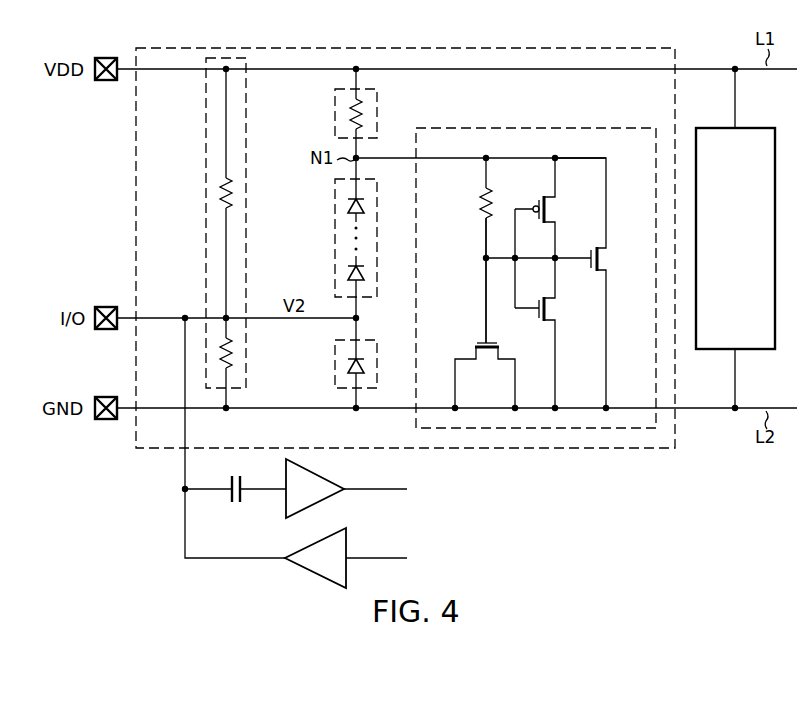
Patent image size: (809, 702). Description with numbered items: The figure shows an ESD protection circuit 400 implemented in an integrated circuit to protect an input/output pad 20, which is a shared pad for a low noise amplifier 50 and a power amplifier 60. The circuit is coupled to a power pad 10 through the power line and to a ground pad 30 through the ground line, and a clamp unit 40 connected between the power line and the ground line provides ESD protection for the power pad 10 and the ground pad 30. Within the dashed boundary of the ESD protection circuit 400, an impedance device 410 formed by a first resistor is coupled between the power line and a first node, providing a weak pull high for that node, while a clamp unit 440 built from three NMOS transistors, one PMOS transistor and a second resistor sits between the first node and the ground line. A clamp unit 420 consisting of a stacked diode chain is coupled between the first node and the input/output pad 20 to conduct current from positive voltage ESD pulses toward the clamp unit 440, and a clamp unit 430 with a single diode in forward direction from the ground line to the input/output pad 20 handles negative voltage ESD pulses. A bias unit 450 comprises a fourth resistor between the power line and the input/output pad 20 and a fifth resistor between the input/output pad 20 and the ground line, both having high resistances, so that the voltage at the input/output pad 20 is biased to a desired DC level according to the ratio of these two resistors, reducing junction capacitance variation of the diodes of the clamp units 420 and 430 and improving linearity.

The power pad 10 is at (108, 56).
The I/O pad 20 is at (108, 306).
The ground pad 30 is at (108, 396).
The clamp unit 40 is at (745, 272).
The low noise amplifier 50 is at (314, 476).
The power amplifier 60 is at (316, 544).
The ESD protection circuit 400 is at (404, 47).
The impedance device 410 is at (343, 113).
The clamp unit 420 is at (335, 238).
The clamp unit 430 is at (335, 362).
The clamp unit 440 is at (536, 260).
The bias unit 450 is at (214, 233).